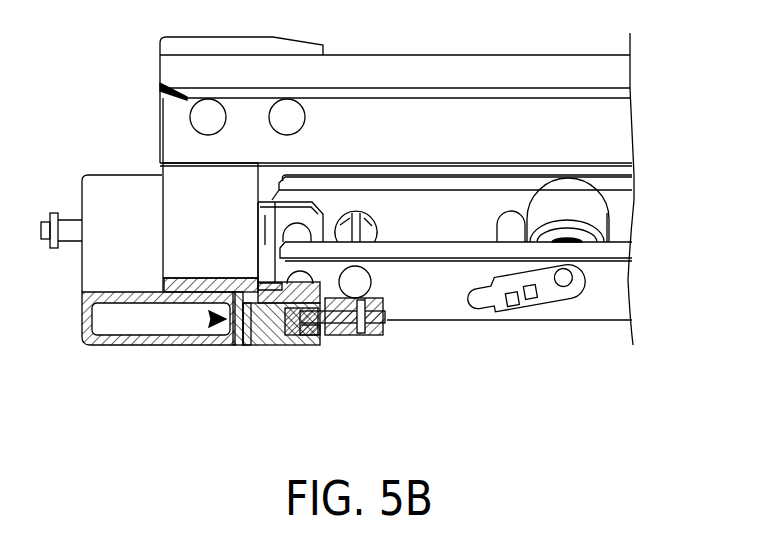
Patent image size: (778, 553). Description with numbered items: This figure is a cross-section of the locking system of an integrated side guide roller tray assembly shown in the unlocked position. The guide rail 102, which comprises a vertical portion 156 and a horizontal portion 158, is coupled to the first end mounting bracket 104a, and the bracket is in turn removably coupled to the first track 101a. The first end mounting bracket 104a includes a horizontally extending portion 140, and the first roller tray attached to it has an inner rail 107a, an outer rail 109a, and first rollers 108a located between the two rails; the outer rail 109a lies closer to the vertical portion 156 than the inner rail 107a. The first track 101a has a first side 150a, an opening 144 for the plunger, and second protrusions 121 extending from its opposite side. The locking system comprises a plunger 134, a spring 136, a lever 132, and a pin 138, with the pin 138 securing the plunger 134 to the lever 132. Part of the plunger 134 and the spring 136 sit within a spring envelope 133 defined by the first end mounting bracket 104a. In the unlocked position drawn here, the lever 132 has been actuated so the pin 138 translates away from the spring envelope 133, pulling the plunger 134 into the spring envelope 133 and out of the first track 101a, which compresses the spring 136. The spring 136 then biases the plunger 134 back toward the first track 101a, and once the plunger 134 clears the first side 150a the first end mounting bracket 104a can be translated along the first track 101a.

The guide rail 102 is at (431, 75).
The horizontal portion 158 is at (503, 83).
The vertical portion 156 is at (470, 140).
The first end mounting bracket 104a is at (183, 197).
The outer rail 109a is at (618, 182).
The first rollers 108a is at (606, 218).
The inner rail 107a is at (608, 288).
The horizontally extending portion 140 is at (223, 248).
The first track 101a is at (142, 236).
The second protrusions 121 is at (52, 213).
The opening 144 is at (211, 319).
The first side 150a is at (247, 343).
The spring envelope 133 is at (258, 343).
The plunger 134 is at (278, 317).
The spring 136 is at (318, 325).
The pin 138 is at (361, 336).
The lever 132 is at (384, 330).